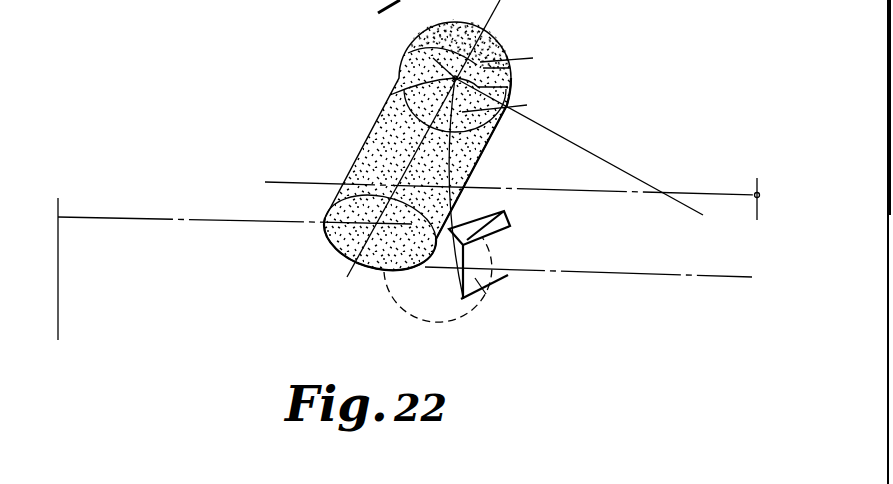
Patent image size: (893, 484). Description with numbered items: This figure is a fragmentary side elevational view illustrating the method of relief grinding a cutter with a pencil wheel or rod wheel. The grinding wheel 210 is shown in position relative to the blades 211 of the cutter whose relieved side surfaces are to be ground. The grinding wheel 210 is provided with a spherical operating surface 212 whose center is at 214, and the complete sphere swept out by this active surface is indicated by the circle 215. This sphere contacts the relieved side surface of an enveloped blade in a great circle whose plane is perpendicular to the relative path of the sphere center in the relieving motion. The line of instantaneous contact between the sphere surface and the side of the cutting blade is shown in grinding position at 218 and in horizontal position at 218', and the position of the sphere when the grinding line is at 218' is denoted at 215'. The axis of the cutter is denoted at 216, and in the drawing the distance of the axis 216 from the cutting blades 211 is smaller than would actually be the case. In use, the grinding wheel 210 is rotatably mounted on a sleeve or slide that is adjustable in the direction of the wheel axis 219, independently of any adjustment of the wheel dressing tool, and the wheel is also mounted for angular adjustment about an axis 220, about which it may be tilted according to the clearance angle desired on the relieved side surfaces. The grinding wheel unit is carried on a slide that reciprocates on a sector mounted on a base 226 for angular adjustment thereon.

The grinding wheel 210 is at (380, 127).
The blades 211 is at (485, 290).
The spherical operating surface 212 is at (500, 47).
The center of the spherical operating surface 214 is at (408, 89).
The circle indicating the complete sphere 215 is at (428, 84).
The position of the sphere 215' is at (438, 299).
The axis of the cutter 216 is at (757, 192).
The line of instantaneous contact 218 is at (520, 85).
The line of instantaneous contact in horizontal position 218' is at (457, 258).
The wheel axis 219 is at (410, 170).
The axis of angular adjustment 220 is at (262, 222).
The base 226 is at (420, 0).